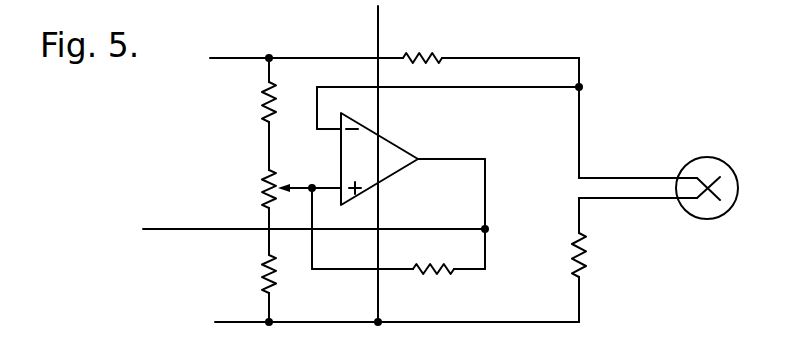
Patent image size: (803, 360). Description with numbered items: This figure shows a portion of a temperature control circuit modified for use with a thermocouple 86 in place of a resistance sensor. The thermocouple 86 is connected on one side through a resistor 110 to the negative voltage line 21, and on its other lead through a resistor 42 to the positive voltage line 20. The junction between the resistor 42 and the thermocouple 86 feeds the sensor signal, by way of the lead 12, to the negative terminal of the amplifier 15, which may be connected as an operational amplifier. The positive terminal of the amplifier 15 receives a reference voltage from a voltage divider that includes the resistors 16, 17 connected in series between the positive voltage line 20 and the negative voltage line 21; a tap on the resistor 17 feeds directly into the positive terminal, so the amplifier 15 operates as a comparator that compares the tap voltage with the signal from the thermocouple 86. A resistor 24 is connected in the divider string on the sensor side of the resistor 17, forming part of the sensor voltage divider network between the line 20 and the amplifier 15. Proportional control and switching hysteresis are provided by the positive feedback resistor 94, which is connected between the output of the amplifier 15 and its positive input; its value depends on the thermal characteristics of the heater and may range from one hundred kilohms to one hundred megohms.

The lead 12 is at (579, 138).
The amplifier 15 is at (398, 143).
The resistor 16 is at (258, 94).
The resistor 17 is at (263, 192).
The positive voltage line 20 is at (333, 57).
The negative voltage line 21 is at (481, 324).
The resistor 24 is at (262, 266).
The resistor 42 is at (432, 55).
The thermocouple 86 is at (718, 160).
The positive feedback resistor 94 is at (422, 273).
The resistor 110 is at (588, 252).